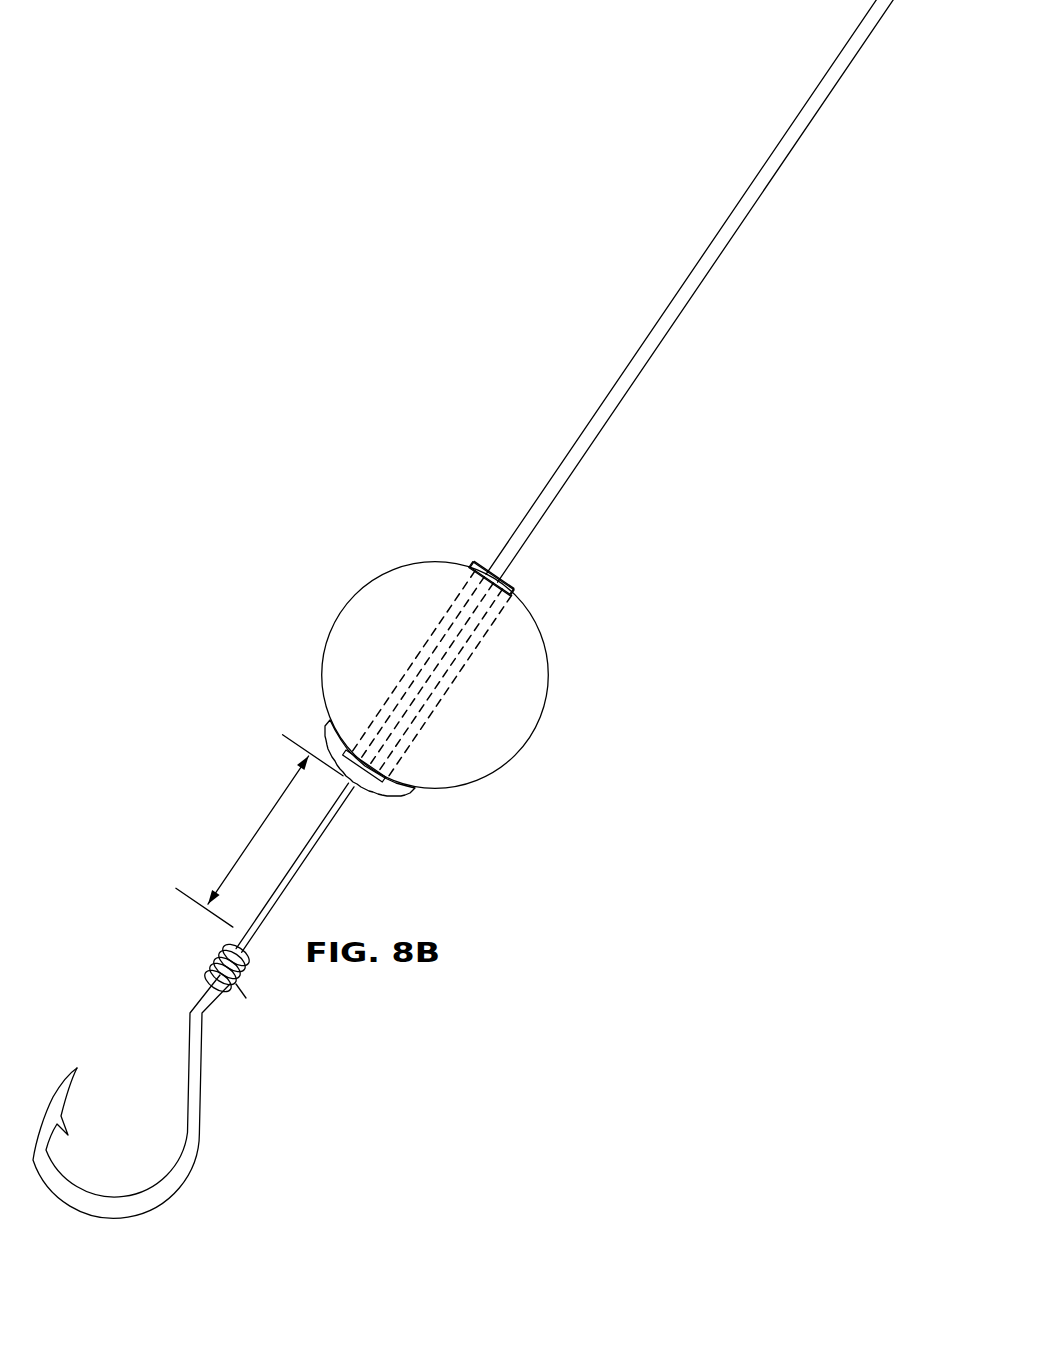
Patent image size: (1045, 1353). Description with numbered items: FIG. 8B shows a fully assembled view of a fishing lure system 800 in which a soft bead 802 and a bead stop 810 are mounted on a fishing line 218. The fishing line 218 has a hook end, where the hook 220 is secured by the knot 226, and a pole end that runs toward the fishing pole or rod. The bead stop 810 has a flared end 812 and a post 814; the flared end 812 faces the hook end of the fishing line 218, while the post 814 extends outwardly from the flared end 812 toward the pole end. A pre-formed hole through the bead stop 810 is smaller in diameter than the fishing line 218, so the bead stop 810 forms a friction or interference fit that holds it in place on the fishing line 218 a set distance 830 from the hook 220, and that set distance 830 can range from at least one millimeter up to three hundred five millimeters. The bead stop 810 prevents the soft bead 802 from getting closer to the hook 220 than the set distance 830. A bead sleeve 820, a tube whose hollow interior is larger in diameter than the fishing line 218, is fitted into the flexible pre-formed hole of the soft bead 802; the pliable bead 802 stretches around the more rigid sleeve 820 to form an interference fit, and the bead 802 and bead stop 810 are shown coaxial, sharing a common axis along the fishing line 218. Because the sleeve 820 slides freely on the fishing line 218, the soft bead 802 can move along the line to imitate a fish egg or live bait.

The fishing rig assembly 800 is at (318, 334).
The fishing line 218 is at (838, 80).
The soft bead 802 is at (548, 683).
The bead stop 810 is at (498, 630).
The bead sleeve 820 is at (472, 562).
The post 814 is at (512, 590).
The flared end 812 is at (412, 793).
The set distance 830 is at (268, 812).
The knot 226 is at (222, 956).
The hook 220 is at (199, 1120).